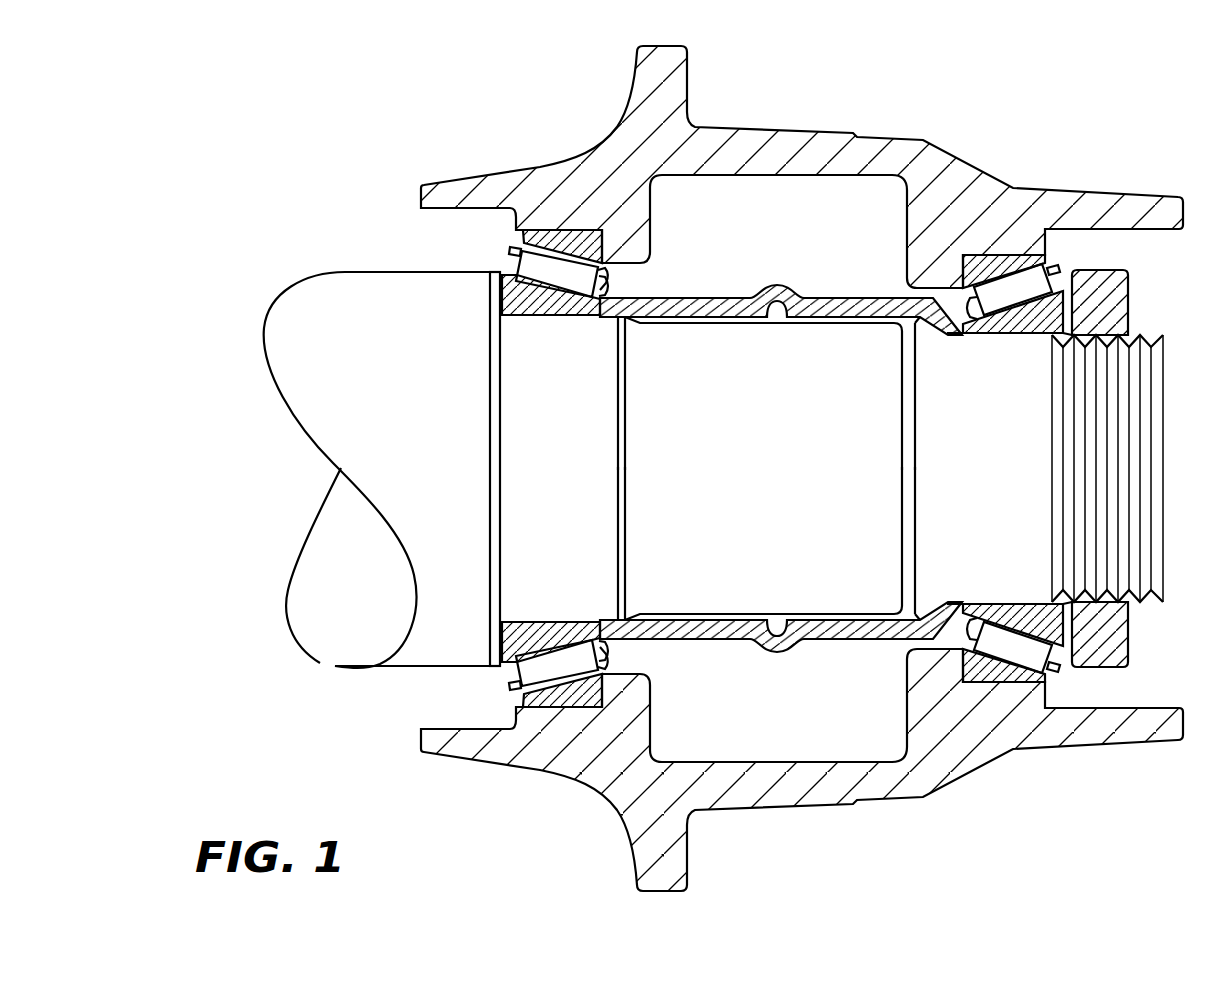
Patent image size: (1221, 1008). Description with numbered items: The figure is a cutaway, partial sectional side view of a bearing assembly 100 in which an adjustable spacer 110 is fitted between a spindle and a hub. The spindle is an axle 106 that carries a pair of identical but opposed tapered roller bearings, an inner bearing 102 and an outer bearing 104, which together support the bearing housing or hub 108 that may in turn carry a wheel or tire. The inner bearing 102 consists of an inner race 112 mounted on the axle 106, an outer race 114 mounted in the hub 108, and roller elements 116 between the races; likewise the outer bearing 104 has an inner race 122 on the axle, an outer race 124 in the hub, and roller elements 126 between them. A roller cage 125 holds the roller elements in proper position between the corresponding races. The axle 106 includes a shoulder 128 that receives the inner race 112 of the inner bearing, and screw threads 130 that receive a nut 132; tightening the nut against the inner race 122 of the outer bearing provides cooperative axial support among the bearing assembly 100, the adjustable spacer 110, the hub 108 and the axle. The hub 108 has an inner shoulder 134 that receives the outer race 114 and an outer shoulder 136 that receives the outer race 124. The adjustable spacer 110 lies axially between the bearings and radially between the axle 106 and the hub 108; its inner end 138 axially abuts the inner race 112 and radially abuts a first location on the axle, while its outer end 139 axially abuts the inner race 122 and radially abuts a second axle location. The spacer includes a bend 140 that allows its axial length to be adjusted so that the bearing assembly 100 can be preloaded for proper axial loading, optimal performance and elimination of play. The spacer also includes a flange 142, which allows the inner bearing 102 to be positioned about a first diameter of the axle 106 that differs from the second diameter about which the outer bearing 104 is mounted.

The bearing assembly 100 is at (330, 158).
The inner bearing 102 is at (500, 238).
The outer bearing 104 is at (1092, 254).
The axle 106 is at (317, 300).
The hub 108 is at (943, 163).
The adjustable spacer 110 is at (712, 302).
The inner race 112 is at (522, 307).
The outer race 114 is at (582, 237).
The roller elements 116 is at (580, 290).
The inner race 122 is at (990, 330).
The outer race 124 is at (1017, 258).
The roller cage 125 is at (510, 688).
The roller elements 126 is at (1013, 305).
The shoulder 128 is at (462, 300).
The screw threads 130 is at (1143, 340).
The nut 132 is at (1120, 293).
The inner shoulder 134 is at (640, 238).
The outer shoulder 136 is at (923, 233).
The inner end 138 is at (612, 302).
The outer end 139 is at (951, 330).
The bend 140 is at (773, 292).
The flange 142 is at (932, 330).